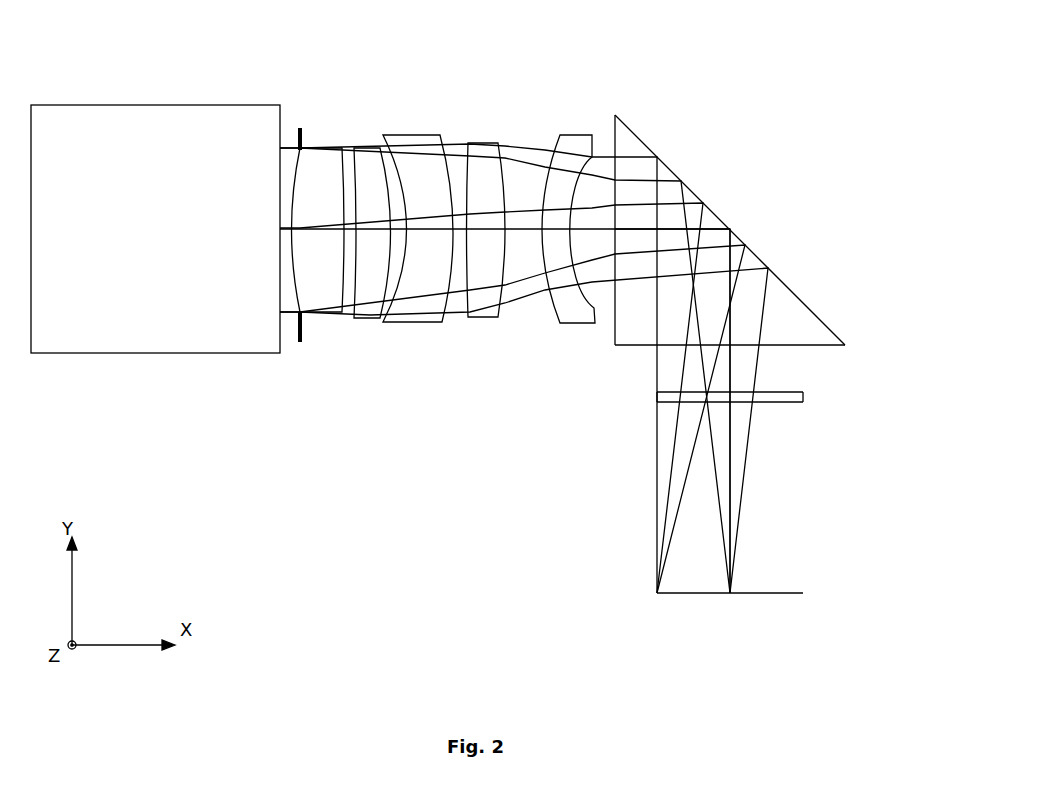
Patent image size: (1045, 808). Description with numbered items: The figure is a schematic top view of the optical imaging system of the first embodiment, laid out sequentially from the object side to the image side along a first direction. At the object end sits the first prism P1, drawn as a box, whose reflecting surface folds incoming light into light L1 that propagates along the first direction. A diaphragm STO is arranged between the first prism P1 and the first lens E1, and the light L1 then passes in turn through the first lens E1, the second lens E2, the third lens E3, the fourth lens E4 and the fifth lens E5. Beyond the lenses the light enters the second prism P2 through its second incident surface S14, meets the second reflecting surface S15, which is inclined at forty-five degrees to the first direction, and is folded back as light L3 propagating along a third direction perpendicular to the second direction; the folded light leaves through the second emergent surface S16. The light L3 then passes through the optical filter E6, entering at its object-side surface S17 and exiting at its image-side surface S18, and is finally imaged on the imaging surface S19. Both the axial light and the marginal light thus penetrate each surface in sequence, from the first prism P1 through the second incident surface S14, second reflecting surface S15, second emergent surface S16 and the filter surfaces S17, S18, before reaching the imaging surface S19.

The first prism P1 is at (155, 204).
The diaphragm STO is at (270, 198).
The first lens E1 is at (329, 183).
The second lens E2 is at (382, 186).
The third lens E3 is at (419, 188).
The fourth lens E4 is at (496, 186).
The fifth lens E5 is at (577, 189).
The second prism P2 is at (659, 370).
The light propagated along the first direction L1 is at (700, 141).
The light propagated along the third direction L3 is at (792, 411).
The optical filter E6 is at (801, 525).
The second incident surface S14 is at (544, 400).
The second reflecting surface S15 is at (686, 400).
The second emergent surface S16 is at (715, 515).
The object-side surface of the optical filter S17 is at (771, 538).
The image-side surface of the optical filter S18 is at (801, 543).
The imaging surface S19 is at (730, 639).